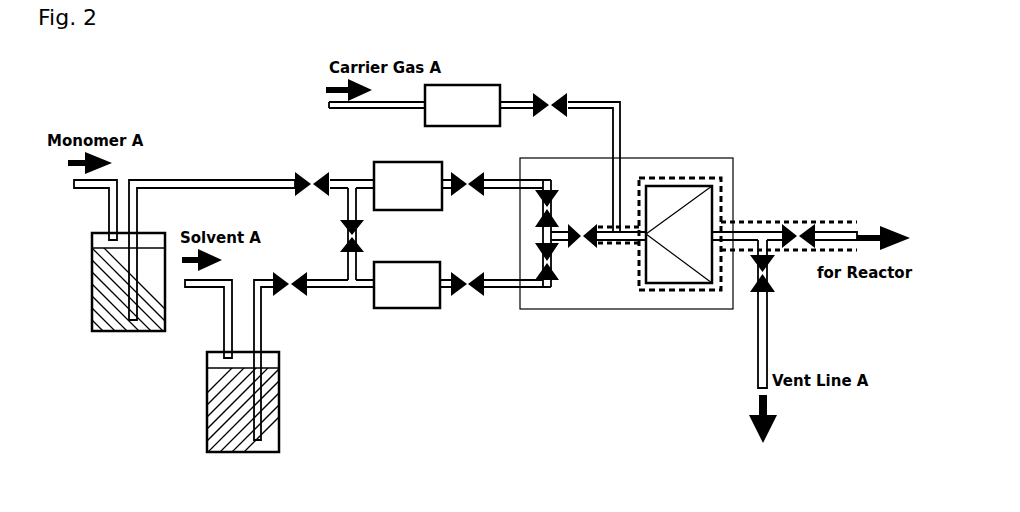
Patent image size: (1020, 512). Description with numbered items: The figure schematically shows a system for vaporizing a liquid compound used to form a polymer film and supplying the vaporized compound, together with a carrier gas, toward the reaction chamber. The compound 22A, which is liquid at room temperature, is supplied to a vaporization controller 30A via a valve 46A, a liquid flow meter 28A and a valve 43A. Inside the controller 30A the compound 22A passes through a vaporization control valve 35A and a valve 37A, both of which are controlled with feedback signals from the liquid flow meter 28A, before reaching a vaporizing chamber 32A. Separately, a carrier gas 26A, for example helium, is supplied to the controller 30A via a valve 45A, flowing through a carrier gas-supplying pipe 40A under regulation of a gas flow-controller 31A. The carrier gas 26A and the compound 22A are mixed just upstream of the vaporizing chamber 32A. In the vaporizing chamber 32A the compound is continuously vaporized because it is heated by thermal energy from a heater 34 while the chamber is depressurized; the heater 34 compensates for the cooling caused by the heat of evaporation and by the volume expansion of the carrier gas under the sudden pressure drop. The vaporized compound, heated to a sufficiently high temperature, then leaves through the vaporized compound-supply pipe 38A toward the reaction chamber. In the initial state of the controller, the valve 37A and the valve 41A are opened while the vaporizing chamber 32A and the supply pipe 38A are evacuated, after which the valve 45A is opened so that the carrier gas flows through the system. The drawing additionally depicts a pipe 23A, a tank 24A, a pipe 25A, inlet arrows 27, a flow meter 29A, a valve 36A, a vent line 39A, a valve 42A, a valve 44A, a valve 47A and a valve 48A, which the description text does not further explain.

The compound 22A is at (103, 303).
The monomer supply pipe 23A is at (128, 332).
The solvent tank 24A is at (230, 425).
The solvent supply pipe 25A is at (205, 395).
The carrier gas 26A is at (406, 107).
The supply inlet (flow direction) 27 is at (143, 212).
The liquid flow meter 28A is at (382, 192).
The solvent flow rate controller 29A is at (383, 295).
The vaporization controller 30A is at (655, 162).
The gas flow-controller 31A is at (478, 104).
The vaporizing chamber 32A is at (698, 217).
The heater 34 is at (685, 177).
The vaporization control valve 35A is at (540, 182).
The valve 36A is at (555, 282).
The valve 37A is at (585, 248).
The vaporized compound-supply pipe 38A is at (740, 232).
The vent line 39A is at (760, 323).
The carrier gas-supplying pipe 40A is at (617, 135).
The valve 41A is at (813, 220).
The vent valve 42A is at (775, 290).
The valve 43A is at (460, 197).
The valve 44A is at (458, 295).
The valve 45A is at (565, 93).
The valve 46A is at (291, 177).
The valve 47A is at (277, 290).
The valve 48A is at (338, 248).